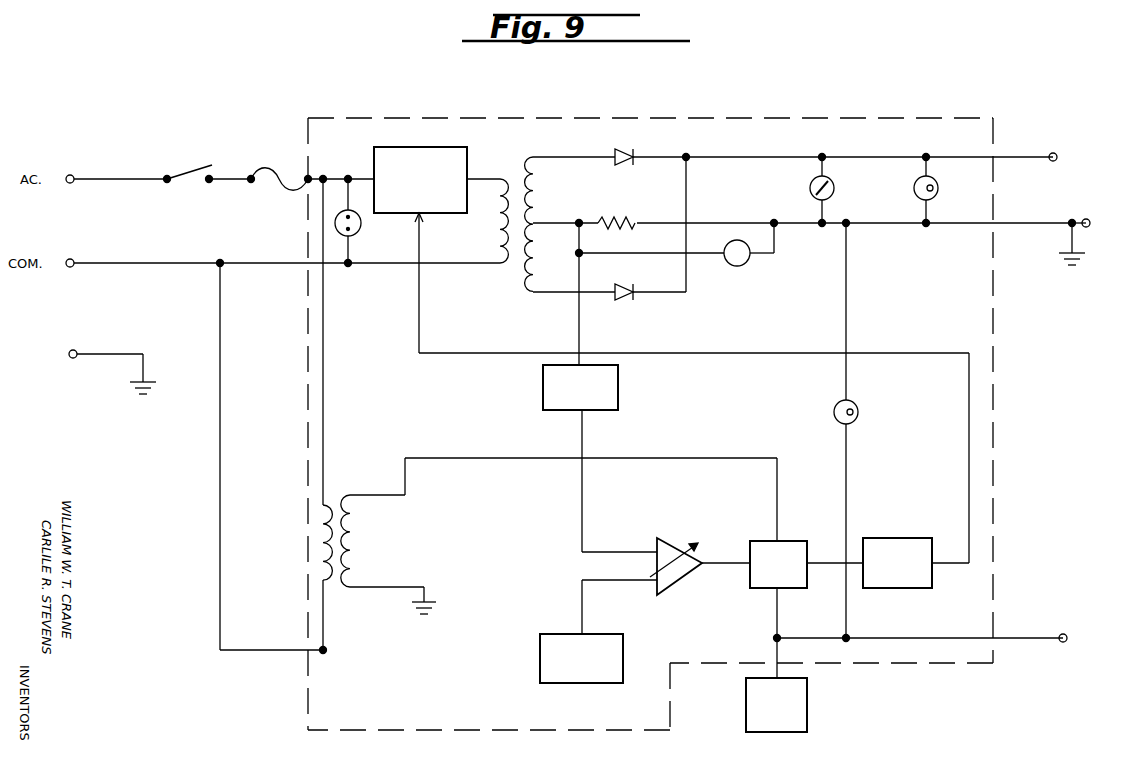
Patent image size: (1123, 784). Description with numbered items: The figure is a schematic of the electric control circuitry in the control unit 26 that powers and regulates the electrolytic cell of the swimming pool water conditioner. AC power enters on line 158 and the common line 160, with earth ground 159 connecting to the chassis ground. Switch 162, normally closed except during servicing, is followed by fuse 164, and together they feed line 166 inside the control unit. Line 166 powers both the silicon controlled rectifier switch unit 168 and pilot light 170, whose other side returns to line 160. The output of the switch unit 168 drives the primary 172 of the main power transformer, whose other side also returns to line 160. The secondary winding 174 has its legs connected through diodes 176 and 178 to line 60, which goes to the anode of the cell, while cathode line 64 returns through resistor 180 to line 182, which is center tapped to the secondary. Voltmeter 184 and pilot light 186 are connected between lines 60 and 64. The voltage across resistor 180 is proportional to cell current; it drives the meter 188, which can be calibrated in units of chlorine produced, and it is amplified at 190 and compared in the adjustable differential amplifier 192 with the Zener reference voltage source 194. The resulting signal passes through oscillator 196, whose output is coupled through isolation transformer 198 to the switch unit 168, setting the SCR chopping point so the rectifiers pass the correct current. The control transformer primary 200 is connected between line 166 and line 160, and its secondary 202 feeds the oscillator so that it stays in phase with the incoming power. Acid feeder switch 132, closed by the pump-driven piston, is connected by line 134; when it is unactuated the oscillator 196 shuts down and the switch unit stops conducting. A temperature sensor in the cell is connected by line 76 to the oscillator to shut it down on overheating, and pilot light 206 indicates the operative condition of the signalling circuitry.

The control unit 26 is at (865, 118).
The anode line 60 is at (1007, 156).
The cathode line 64 is at (1081, 204).
The temperature sensor line 76 is at (1013, 642).
The acid feeder switch 132 is at (809, 705).
The connecting line 134 is at (775, 672).
The power line 158 is at (122, 178).
The earth ground 159 is at (144, 362).
The common line 160 is at (132, 270).
The switch 162 is at (186, 172).
The fuse 164 is at (262, 172).
The control unit line 166 is at (337, 172).
The silicon controlled rectifier switch unit 168 is at (418, 147).
The pilot light 170 is at (335, 226).
The primary winding 172 is at (505, 265).
The secondary winding 174 is at (540, 165).
The diode 176 is at (630, 152).
The diode 178 is at (625, 300).
The resistor 180 is at (620, 222).
The center tap line 182 is at (560, 222).
The voltmeter 184 is at (834, 195).
The pilot light 186 is at (938, 188).
The voltmeter 188 is at (737, 266).
The amplifier 190 is at (620, 388).
The differential amplifier 192 is at (664, 544).
The reference voltage source 194 is at (548, 633).
The oscillator 196 is at (756, 540).
The isolation transformer 198 is at (918, 510).
The control transformer primary 200 is at (323, 541).
The control transformer secondary 202 is at (354, 531).
The pilot light 206 is at (860, 405).